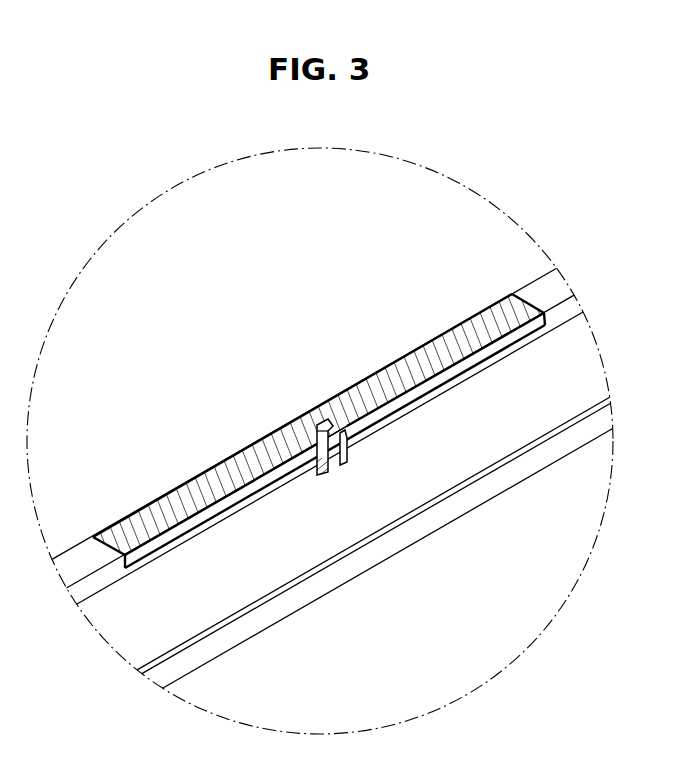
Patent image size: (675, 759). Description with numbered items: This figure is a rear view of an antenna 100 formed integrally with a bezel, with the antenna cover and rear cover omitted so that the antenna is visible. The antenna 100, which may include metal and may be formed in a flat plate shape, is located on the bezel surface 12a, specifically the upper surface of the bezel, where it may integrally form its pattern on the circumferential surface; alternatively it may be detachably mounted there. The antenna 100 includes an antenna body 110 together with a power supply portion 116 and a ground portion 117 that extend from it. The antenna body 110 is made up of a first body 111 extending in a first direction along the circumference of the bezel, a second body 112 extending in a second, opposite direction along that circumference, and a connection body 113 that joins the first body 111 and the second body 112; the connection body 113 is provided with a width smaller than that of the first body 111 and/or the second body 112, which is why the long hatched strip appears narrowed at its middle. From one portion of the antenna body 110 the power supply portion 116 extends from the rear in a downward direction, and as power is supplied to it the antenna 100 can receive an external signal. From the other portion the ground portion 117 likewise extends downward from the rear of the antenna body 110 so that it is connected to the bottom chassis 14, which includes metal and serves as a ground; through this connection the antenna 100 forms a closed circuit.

The antenna 100 is at (319, 425).
The antenna body 110 is at (319, 425).
The first body 111 is at (217, 483).
The second body 112 is at (445, 352).
The connection body 113 is at (308, 423).
The power supply portion 116 is at (328, 474).
The ground portion 117 is at (345, 465).
The bezel surface 12a is at (80, 560).
The bottom chassis 14 is at (332, 478).